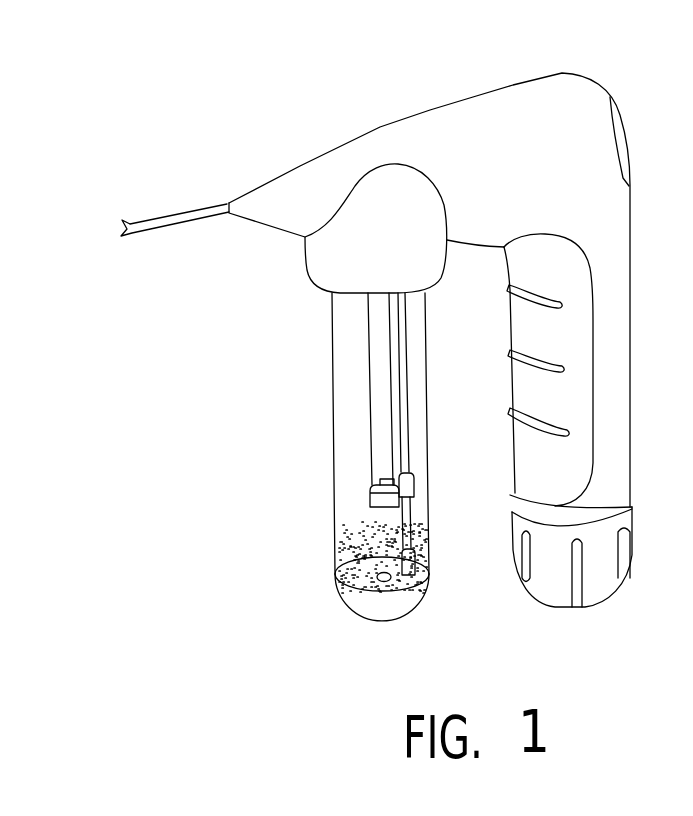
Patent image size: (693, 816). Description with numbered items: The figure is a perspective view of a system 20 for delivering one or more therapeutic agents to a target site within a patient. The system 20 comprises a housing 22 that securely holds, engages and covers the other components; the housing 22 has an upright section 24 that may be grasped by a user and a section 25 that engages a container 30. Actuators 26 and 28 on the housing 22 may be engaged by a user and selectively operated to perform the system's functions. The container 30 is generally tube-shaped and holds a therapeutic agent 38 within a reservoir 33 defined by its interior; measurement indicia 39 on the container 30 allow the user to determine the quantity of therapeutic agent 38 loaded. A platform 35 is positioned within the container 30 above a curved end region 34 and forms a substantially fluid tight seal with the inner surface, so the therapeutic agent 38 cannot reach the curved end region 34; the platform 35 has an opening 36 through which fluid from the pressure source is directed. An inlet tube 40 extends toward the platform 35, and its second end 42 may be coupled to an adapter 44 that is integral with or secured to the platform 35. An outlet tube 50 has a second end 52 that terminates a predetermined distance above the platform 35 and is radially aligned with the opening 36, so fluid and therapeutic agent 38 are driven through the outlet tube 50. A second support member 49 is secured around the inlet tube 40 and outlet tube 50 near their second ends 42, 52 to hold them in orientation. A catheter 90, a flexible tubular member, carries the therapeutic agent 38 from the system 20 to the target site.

The system 20 is at (276, 111).
The housing 22 is at (491, 115).
The upright section 24 is at (618, 386).
The section 25 is at (352, 291).
The actuator 26 is at (608, 590).
The actuator 28 is at (623, 137).
The container 30 is at (318, 380).
The reservoir 33 is at (418, 395).
The curved end region 34 is at (407, 622).
The platform 35 is at (348, 567).
The opening 36 is at (376, 580).
The therapeutic agent 38 is at (415, 527).
The measurement indicia 39 is at (348, 432).
The inlet tube 40 is at (413, 358).
The second end 42 is at (412, 544).
The adapter 44 is at (420, 577).
The second support member 49 is at (361, 499).
The outlet tube 50 is at (345, 333).
The second end 52 is at (378, 481).
The catheter 90 is at (178, 203).